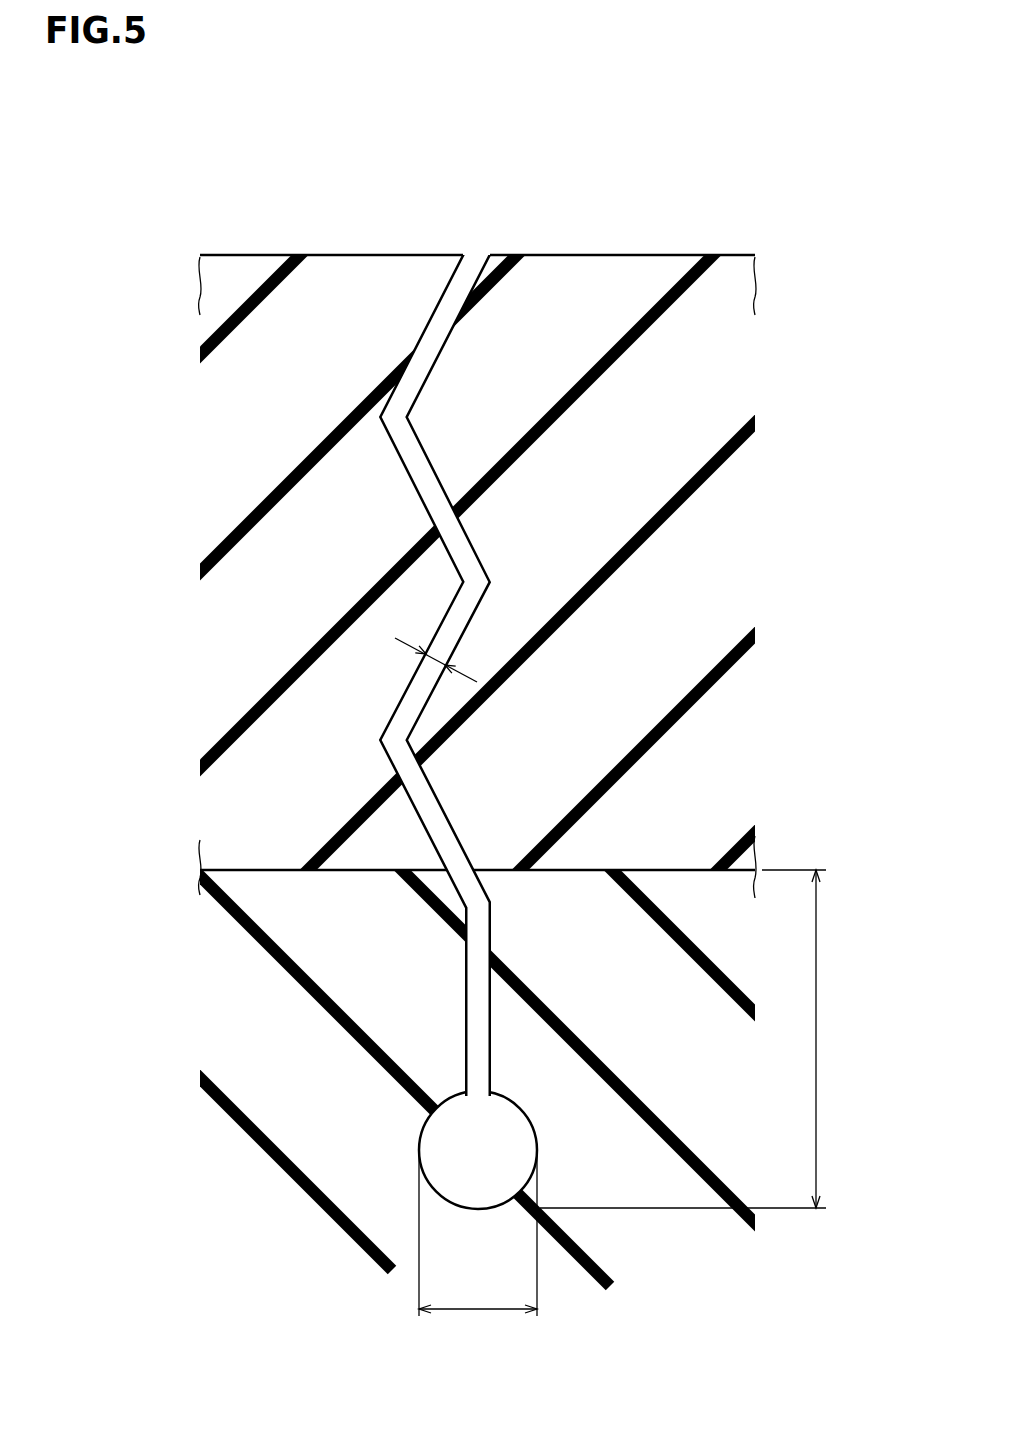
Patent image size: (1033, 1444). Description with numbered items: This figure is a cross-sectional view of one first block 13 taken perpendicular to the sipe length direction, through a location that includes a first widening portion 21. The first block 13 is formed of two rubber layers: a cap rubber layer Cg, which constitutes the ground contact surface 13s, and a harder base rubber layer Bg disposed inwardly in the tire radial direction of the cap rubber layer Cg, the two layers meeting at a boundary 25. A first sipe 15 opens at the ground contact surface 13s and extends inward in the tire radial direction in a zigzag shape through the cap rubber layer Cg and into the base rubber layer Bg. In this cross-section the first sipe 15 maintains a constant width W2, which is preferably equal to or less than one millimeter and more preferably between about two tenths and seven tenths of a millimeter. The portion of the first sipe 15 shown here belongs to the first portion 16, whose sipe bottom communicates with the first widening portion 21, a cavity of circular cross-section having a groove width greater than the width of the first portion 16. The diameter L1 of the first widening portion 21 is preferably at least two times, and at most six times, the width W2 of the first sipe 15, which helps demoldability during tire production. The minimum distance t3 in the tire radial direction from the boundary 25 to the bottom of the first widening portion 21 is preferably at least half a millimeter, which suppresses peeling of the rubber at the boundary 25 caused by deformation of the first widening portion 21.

The first block 13 is at (317, 250).
The ground contact surface 13s is at (618, 255).
The first sipe 15 is at (480, 250).
The first portion 16 is at (425, 468).
The first widening portion 21 is at (476, 1150).
The boundary 25 is at (672, 870).
The width W2 is at (440, 668).
The minimum distance t3 is at (697, 1039).
The diameter L1 is at (478, 1248).
The cap rubber layer Cg is at (283, 577).
The base rubber layer Bg is at (323, 1091).